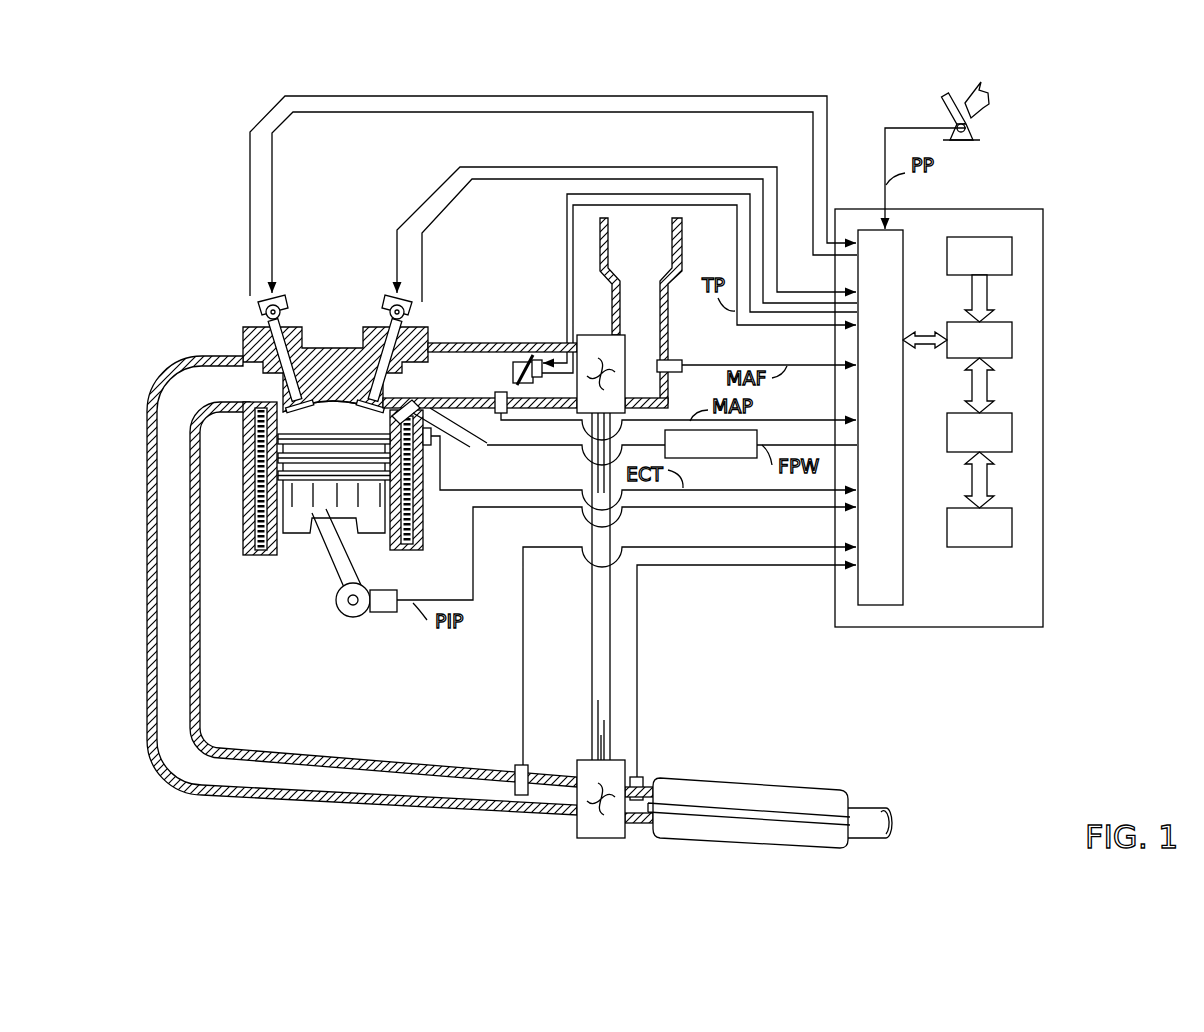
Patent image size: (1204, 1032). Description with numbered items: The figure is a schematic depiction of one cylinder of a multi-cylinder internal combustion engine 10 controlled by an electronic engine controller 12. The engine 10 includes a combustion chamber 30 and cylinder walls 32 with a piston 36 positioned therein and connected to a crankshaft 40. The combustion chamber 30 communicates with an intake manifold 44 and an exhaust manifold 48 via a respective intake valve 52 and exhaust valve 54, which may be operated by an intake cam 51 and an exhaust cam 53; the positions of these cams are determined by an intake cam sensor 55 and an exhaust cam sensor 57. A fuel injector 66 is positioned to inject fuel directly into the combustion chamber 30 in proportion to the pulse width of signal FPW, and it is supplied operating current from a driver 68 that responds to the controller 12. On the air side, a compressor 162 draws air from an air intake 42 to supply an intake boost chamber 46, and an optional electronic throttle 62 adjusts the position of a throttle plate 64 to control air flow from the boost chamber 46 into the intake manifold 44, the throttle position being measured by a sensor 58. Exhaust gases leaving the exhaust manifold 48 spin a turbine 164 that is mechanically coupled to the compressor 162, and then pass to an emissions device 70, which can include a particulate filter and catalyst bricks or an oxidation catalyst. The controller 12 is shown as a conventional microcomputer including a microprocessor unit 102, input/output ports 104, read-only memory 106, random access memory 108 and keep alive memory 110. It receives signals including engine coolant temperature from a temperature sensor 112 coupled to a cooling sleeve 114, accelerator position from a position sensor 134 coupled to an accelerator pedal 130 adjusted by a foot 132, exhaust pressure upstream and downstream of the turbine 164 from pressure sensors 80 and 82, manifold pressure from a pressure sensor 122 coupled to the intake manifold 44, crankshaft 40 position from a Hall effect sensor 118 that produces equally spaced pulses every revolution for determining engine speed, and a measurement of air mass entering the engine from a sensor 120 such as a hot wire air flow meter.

The internal combustion engine 10 is at (183, 284).
The electronic engine controller 12 is at (1035, 210).
The combustion chamber 30 is at (333, 417).
The cylinder walls 32 is at (285, 553).
The piston 36 is at (318, 510).
The crankshaft 40 is at (347, 615).
The air intake 42 is at (641, 313).
The intake manifold 44 is at (480, 375).
The intake boost chamber 46 is at (558, 385).
The exhaust manifold 48 is at (362, 585).
The intake cam 51 is at (390, 297).
The intake valve 52 is at (382, 388).
The exhaust cam 53 is at (283, 297).
The exhaust valve 54 is at (287, 383).
The intake cam sensor 55 is at (405, 318).
The exhaust cam sensor 57 is at (264, 312).
The throttle position sensor 58 is at (547, 352).
The electronic throttle 62 is at (517, 350).
The throttle plate 64 is at (533, 355).
The fuel injector 66 is at (444, 433).
The driver 68 is at (753, 458).
The emissions device 70 is at (662, 840).
The pressure sensor 80 is at (517, 760).
The pressure sensor 82 is at (646, 776).
The microprocessor unit 102 is at (1012, 340).
The input/output ports 104 is at (905, 237).
The read-only memory 106 is at (1012, 257).
The random access memory 108 is at (1012, 432).
The keep alive memory 110 is at (1012, 527).
The temperature sensor 112 is at (430, 450).
The cooling sleeve 114 is at (418, 524).
The Hall effect sensor 118 is at (378, 612).
The air mass sensor 120 is at (676, 363).
The pressure sensor 122 is at (501, 392).
The accelerator pedal 130 is at (945, 100).
The foot 132 is at (990, 93).
The position sensor 134 is at (972, 128).
The compressor 162 is at (606, 333).
The turbine 164 is at (582, 757).